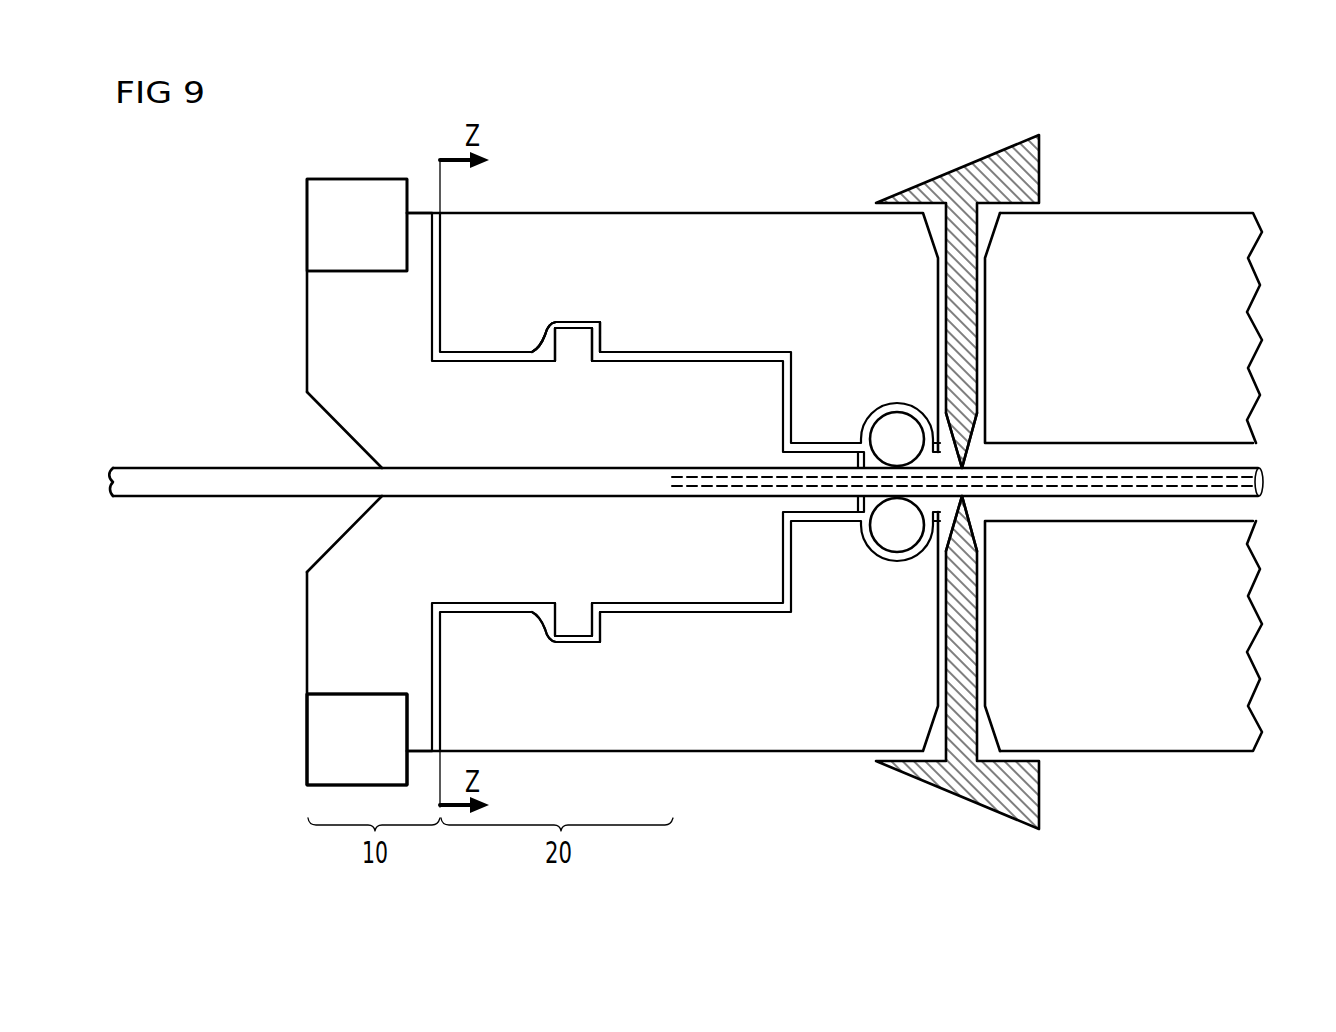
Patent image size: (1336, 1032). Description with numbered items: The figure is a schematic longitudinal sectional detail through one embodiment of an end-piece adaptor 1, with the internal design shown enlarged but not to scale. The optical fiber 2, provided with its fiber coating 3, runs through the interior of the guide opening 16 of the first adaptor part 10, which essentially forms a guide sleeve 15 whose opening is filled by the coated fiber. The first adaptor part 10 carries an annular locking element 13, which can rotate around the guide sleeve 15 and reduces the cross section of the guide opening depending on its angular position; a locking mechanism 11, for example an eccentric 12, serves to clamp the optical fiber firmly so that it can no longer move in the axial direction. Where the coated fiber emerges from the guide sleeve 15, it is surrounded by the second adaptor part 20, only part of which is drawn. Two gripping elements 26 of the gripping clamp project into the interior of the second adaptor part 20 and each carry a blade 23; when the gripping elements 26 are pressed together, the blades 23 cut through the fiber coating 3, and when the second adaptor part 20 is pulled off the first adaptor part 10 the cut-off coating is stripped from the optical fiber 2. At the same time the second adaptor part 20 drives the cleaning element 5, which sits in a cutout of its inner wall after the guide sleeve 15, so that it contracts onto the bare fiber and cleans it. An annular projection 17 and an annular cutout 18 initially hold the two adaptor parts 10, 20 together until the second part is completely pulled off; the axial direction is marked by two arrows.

The end-piece adaptor 1 is at (846, 439).
The optical fiber 2 is at (1260, 482).
The fiber coating 3 is at (1237, 492).
The cleaning element 5 is at (895, 422).
The first adaptor part 10 is at (317, 452).
The locking mechanism 11 is at (357, 739).
The eccentric 12 is at (357, 739).
The annular locking element 13 is at (318, 223).
The guide sleeve 15 is at (686, 482).
The guide opening 16 is at (393, 478).
The annular projection 17 is at (573, 337).
The annular cutout 18 is at (566, 341).
The second adaptor part 20 is at (815, 738).
The blade 23 is at (982, 480).
The gripping element 26 is at (957, 489).